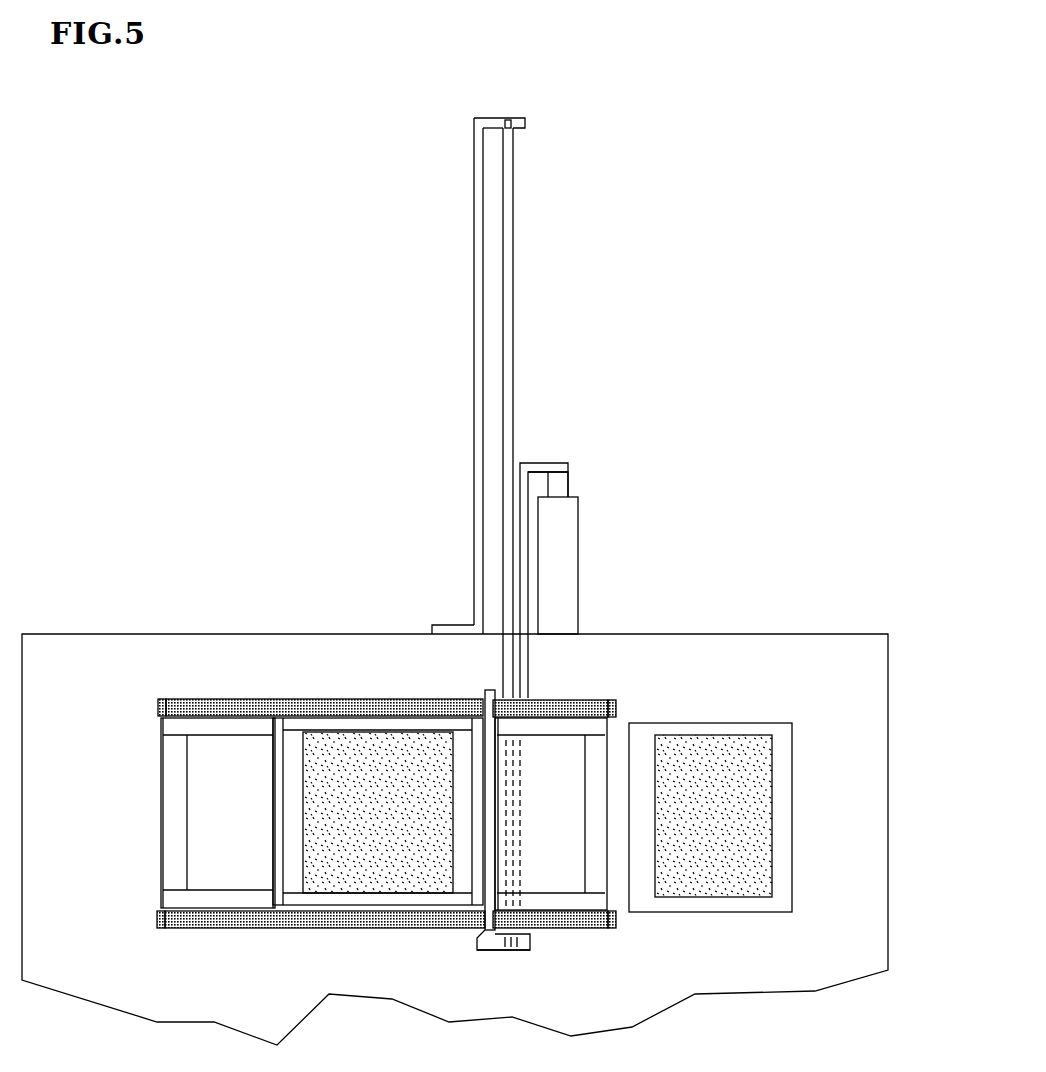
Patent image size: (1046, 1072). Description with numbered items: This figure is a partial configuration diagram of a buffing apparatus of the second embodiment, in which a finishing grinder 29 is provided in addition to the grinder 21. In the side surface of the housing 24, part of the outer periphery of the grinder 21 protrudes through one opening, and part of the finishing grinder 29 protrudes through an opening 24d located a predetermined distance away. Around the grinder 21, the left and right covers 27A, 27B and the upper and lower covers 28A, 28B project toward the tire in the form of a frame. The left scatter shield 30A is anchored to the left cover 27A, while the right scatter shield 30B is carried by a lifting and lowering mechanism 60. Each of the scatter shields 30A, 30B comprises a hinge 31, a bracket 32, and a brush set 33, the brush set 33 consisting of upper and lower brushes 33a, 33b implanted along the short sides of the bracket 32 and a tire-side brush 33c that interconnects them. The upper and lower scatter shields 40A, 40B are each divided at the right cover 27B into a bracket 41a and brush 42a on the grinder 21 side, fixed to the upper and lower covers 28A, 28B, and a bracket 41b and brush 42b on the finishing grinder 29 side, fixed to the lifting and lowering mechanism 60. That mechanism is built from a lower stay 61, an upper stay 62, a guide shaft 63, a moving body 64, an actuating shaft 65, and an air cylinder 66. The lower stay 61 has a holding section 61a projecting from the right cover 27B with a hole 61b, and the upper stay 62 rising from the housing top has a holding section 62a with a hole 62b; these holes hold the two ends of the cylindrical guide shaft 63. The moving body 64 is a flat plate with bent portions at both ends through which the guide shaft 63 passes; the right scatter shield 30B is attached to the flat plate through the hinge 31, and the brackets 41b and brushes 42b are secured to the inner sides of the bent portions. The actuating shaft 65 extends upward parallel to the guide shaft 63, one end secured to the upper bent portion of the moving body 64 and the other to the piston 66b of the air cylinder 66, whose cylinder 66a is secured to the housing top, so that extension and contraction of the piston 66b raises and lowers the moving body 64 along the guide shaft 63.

The housing 24 is at (103, 634).
The opening 24d is at (708, 912).
The finishing grinder 29 is at (730, 735).
The lifting and lowering mechanism 60 is at (470, 392).
The upper stay 62 is at (483, 222).
The holding section 62a is at (482, 117).
The hole 62b is at (514, 125).
The guide shaft 63 is at (515, 140).
The actuating shaft 65 is at (536, 463).
The air cylinder 66 is at (582, 603).
The cylinder 66a is at (570, 490).
The piston 66b is at (580, 566).
The moving body 64 is at (492, 836).
The lower stay 61 is at (478, 940).
The holding section 61a is at (495, 952).
The hole 61b is at (522, 949).
The upper scatter shield 40A is at (176, 672).
The lower scatter shield 40B is at (648, 962).
The bracket 41a is at (182, 699).
The brush 42a is at (158, 705).
The bracket 41b is at (572, 700).
The brush 42b is at (616, 706).
The left scatter shield 30A is at (163, 774).
The right scatter shield 30B is at (610, 716).
The bracket 32 is at (161, 848).
The brush set 33 is at (188, 820).
The upper brush 33a is at (251, 732).
The lower brush 33b is at (252, 895).
The tire-side brush 33c is at (188, 790).
The grinder 21 is at (352, 745).
The left cover 27A is at (283, 745).
The right cover 27B is at (470, 750).
The upper cover 28A is at (425, 728).
The lower cover 28B is at (298, 893).
The hinge 31 is at (523, 775).